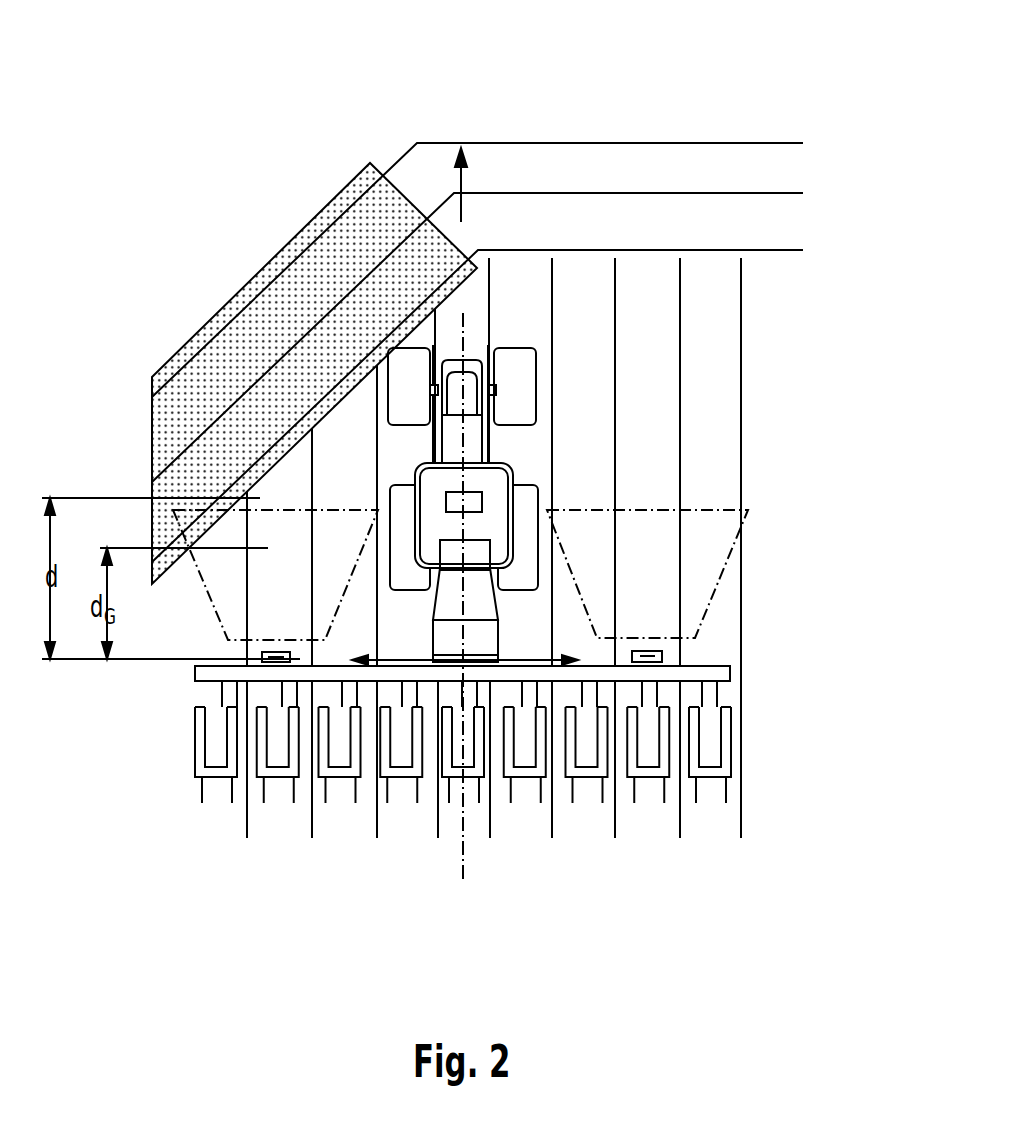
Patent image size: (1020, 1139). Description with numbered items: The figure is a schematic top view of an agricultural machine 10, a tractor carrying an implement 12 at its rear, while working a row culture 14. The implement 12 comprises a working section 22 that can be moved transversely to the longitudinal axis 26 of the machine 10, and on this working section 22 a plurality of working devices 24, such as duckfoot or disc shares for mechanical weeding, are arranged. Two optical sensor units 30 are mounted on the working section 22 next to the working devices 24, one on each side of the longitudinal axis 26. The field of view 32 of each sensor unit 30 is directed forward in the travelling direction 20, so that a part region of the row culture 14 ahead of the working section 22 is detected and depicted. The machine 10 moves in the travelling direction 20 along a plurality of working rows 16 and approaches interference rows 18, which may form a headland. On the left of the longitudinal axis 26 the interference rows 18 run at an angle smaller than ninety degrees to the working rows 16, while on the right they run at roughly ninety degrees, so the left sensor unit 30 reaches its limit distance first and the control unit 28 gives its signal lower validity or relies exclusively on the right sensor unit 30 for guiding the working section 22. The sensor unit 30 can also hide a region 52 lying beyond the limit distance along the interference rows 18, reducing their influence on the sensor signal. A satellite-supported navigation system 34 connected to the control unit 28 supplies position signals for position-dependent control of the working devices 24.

The agricultural machine 10 is at (528, 272).
The implement 12 is at (620, 503).
The row culture 14 is at (314, 320).
The working rows 16 is at (741, 313).
The interference rows 18 is at (750, 142).
The travelling direction 20 is at (462, 182).
The working section 22 is at (710, 673).
The working devices 24 is at (215, 748).
The longitudinal axis 26 is at (470, 868).
The control unit 28 is at (470, 553).
The optical sensor unit 30 is at (280, 657).
The field of view 32 is at (300, 612).
The satellite-supported navigation system 34 is at (473, 500).
The hidden region 52 is at (287, 302).